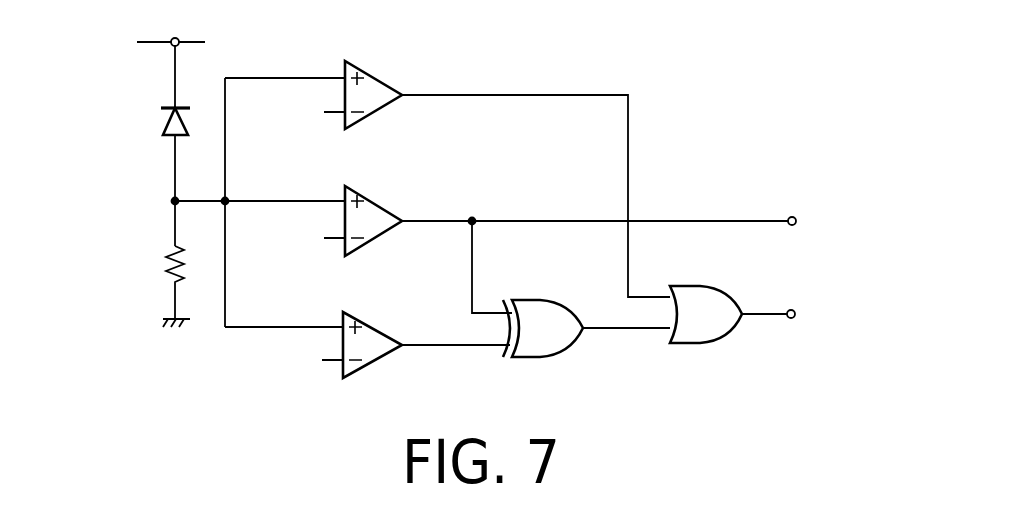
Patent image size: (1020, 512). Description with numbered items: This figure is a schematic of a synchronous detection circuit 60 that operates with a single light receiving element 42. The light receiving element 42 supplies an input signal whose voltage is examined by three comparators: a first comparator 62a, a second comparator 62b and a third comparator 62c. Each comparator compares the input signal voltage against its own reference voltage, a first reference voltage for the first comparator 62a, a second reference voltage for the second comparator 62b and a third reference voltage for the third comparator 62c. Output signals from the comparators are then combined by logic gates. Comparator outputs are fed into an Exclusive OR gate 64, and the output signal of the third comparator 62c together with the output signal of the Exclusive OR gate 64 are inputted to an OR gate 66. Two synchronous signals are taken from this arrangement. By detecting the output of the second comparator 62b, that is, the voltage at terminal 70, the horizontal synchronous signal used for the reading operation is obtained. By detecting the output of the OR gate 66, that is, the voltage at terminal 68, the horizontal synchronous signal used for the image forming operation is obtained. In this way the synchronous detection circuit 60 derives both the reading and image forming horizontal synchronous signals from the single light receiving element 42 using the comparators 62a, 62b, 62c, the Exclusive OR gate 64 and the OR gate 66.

The synchronous detection circuit 60 is at (673, 71).
The light receiving element 42 is at (163, 124).
The first comparator 62a is at (379, 333).
The second comparator 62b is at (379, 208).
The third comparator 62c is at (379, 81).
The Exclusive OR gate 64 is at (597, 299).
The OR gate 66 is at (757, 288).
The terminal 68 is at (792, 319).
The terminal 70 is at (792, 217).